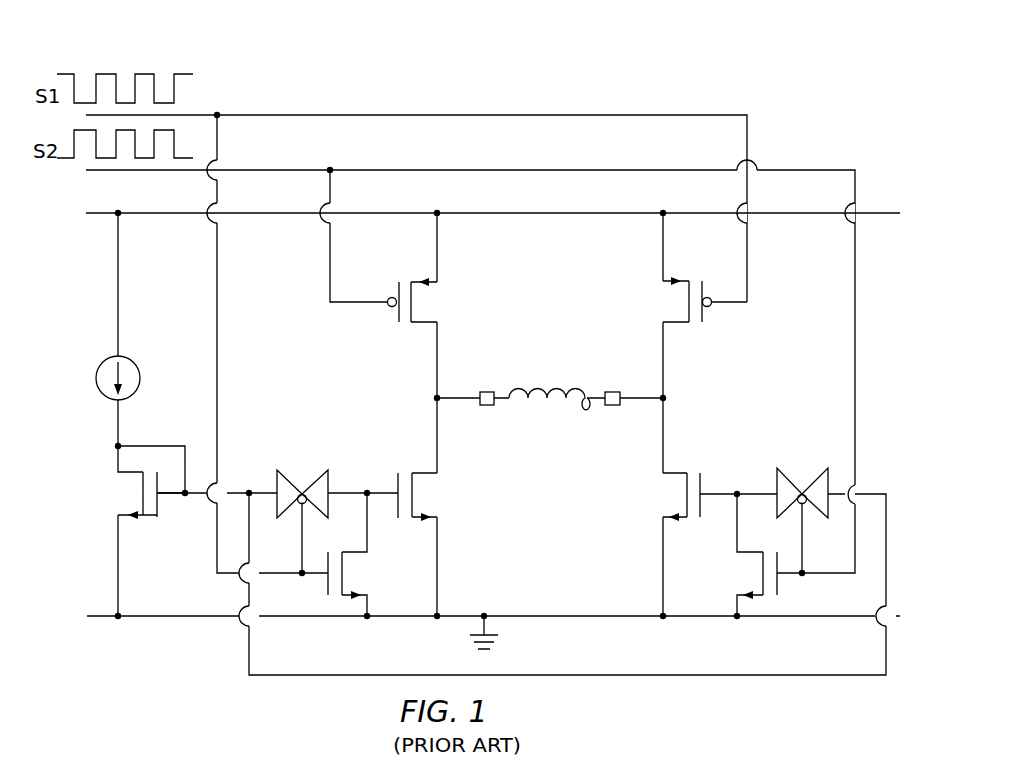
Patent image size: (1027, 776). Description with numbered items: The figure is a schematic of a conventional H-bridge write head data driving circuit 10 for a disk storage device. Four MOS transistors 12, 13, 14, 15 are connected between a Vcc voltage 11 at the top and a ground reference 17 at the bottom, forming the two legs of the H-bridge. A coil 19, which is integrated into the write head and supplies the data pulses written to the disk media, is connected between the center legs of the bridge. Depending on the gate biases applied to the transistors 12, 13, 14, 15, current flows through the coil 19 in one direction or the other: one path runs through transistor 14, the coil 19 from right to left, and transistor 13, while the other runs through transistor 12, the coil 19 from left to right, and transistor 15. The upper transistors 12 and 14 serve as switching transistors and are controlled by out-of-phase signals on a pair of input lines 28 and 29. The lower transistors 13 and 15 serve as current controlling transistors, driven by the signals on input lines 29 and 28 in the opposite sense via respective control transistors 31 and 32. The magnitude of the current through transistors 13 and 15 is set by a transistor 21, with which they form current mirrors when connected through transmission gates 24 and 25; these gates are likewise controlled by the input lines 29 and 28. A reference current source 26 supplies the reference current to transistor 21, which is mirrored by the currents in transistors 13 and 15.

The H-bridge write head data driving circuit 10 is at (738, 91).
The Vcc voltage 11 is at (537, 213).
The switching transistor 12 is at (423, 325).
The current controlling transistor 13 is at (427, 472).
The switching transistor 14 is at (680, 325).
The current controlling transistor 15 is at (675, 472).
The ground reference 17 is at (577, 616).
The coil 19 is at (563, 389).
The transistor 21 is at (142, 515).
The transmission gate 24 is at (318, 476).
The transmission gate 25 is at (818, 480).
The reference current source 26 is at (128, 357).
The input line 28 is at (490, 170).
The input line 29 is at (493, 115).
The control transistor 31 is at (353, 554).
The control transistor 32 is at (749, 554).